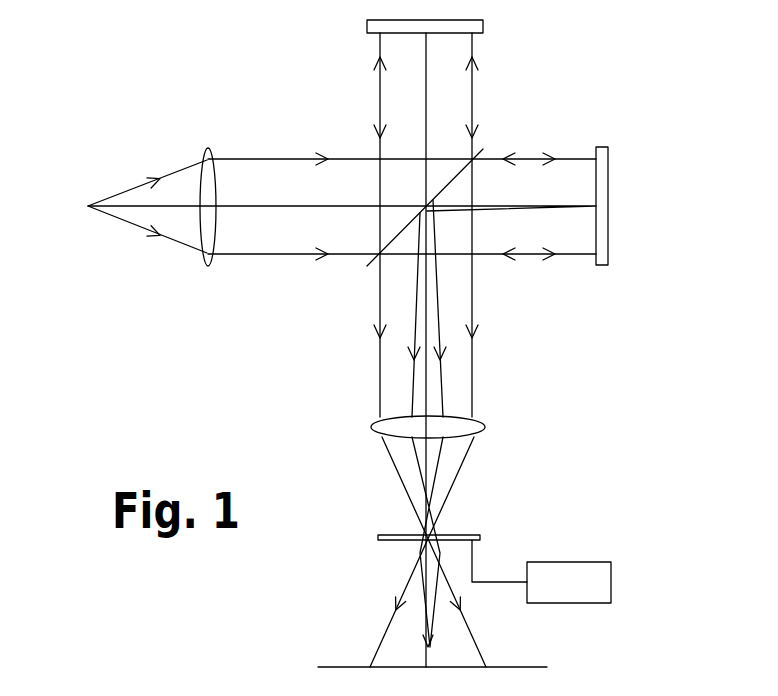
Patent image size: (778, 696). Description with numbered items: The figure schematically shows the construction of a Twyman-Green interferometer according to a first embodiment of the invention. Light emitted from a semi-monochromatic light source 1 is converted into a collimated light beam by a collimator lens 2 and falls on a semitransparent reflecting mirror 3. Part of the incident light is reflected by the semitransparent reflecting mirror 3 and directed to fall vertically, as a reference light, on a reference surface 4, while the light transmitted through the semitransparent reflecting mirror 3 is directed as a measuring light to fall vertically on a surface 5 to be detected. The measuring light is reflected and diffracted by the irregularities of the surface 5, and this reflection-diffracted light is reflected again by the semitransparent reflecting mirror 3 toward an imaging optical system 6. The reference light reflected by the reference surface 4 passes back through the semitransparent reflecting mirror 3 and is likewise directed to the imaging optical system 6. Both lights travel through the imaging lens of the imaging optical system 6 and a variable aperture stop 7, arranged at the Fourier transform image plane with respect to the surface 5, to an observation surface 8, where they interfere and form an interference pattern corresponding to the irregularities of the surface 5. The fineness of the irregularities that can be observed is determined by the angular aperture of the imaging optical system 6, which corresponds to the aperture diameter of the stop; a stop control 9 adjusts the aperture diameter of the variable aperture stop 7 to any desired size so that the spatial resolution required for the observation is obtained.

The semi-monochromatic light source 1 is at (88, 206).
The collimator lens 2 is at (206, 150).
The semitransparent reflecting mirror 3 is at (475, 155).
The reference surface 4 is at (375, 33).
The surface to be detected 5 is at (595, 157).
The imaging optical system 6 is at (480, 418).
The variable aperture stop 7 is at (462, 533).
The observation surface 8 is at (522, 667).
The stop control 9 is at (602, 562).